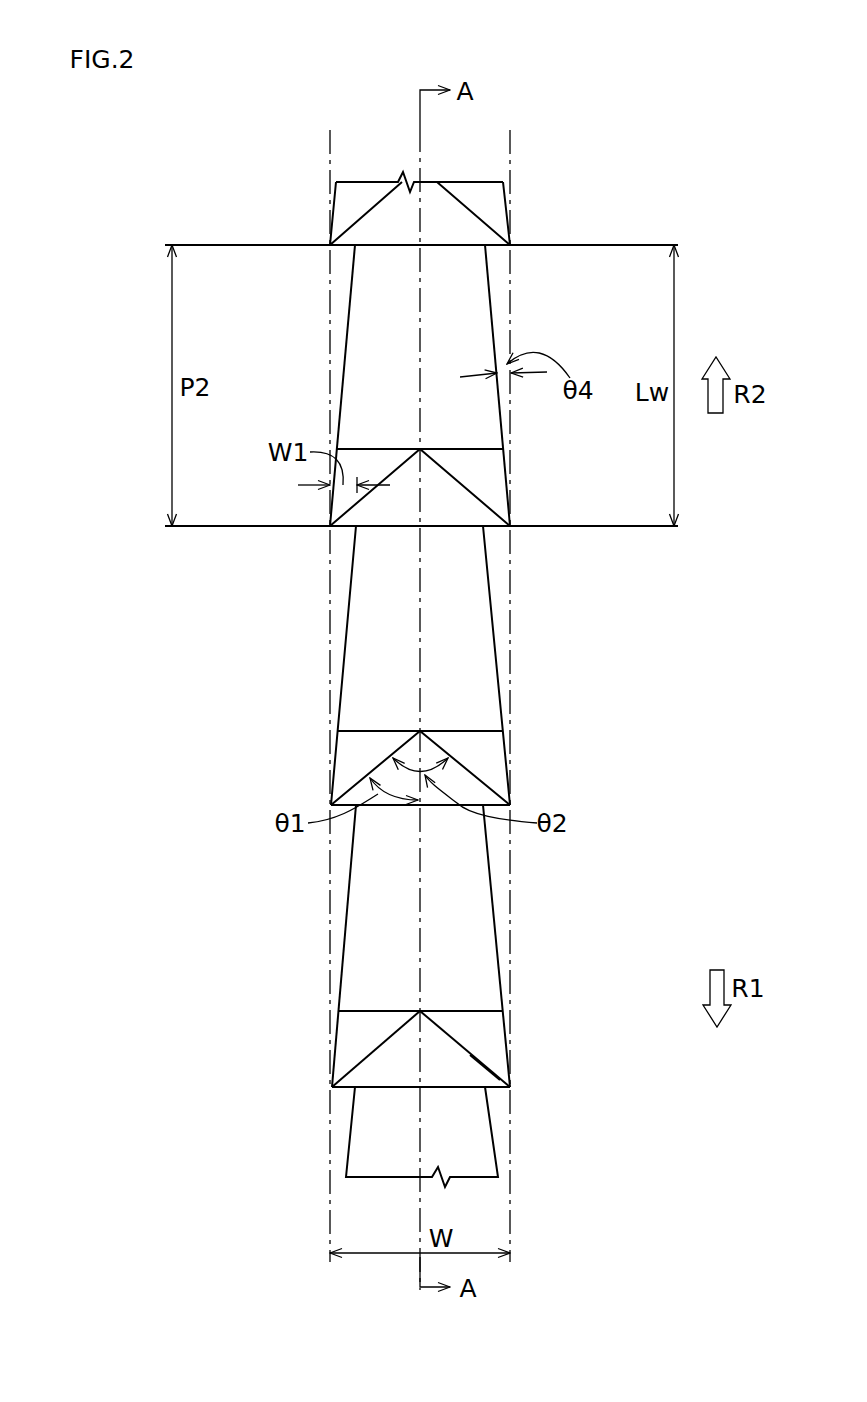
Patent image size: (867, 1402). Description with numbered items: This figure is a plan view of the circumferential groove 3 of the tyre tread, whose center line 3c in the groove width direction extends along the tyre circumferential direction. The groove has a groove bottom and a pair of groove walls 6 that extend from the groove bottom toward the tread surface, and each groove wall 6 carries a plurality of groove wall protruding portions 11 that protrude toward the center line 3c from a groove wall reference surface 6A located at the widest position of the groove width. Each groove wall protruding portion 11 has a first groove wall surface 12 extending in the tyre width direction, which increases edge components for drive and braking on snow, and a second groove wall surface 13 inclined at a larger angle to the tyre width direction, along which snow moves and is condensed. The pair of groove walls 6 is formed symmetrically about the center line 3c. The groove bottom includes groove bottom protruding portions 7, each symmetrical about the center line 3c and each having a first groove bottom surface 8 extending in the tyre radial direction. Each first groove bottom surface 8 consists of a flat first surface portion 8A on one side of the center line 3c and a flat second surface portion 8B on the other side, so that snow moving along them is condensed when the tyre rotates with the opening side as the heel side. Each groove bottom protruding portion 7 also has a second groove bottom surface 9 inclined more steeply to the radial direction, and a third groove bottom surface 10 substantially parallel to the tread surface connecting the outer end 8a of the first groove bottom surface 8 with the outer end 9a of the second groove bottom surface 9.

The circumferential groove 3 is at (692, 250).
The center line 3c is at (417, 137).
The groove walls 6 is at (350, 647).
The groove wall reference surface 6A is at (331, 158).
The groove bottom protruding portions 7 is at (460, 603).
The first groove bottom surface 8 is at (224, 1133).
The first surface portion 8A is at (373, 1053).
The second surface portion 8B is at (465, 1052).
The outer end of the first groove bottom surface 8a is at (490, 1045).
The second groove bottom surface 9 is at (378, 880).
The outer end of the second groove bottom surface 9a is at (480, 985).
The third groove bottom surface 10 is at (378, 1023).
The groove wall protruding portions 11 is at (340, 317).
The first groove wall surface 12 is at (497, 243).
The second groove wall surface 13 is at (488, 318).